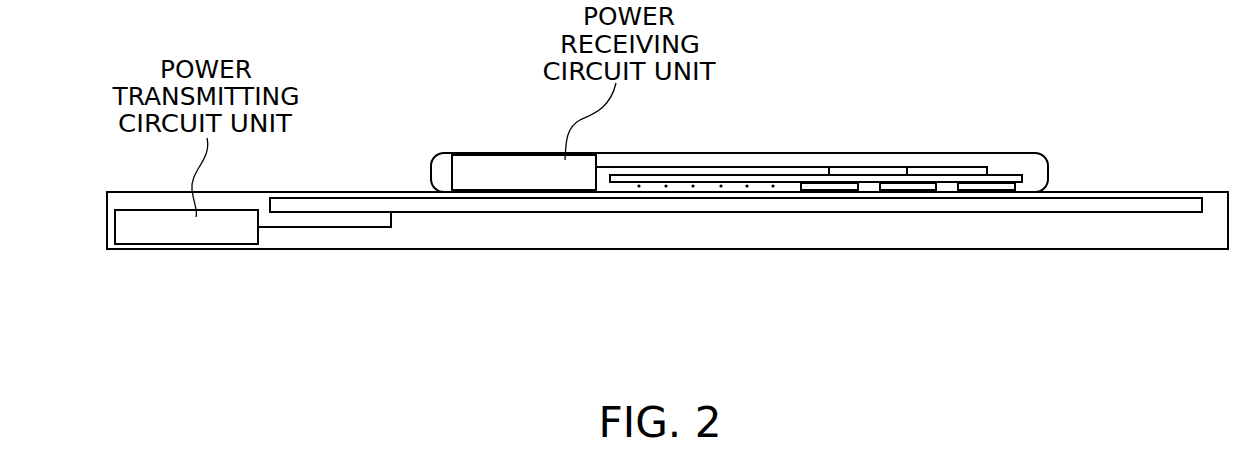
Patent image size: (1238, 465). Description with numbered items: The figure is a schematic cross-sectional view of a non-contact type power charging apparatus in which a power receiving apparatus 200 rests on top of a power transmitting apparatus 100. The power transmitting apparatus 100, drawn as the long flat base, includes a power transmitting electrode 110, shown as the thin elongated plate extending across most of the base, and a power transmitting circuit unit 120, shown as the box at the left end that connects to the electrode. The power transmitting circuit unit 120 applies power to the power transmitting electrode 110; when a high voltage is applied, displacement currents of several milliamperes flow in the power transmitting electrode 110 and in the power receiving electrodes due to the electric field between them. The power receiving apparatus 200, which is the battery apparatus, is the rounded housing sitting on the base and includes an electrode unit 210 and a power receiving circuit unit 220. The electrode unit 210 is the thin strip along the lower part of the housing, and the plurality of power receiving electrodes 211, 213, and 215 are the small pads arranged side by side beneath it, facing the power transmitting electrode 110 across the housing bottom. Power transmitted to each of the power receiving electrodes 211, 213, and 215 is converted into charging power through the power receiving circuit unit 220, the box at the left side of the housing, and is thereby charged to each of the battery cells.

The power transmitting apparatus 100 is at (518, 252).
The power transmitting electrode 110 is at (718, 213).
The power transmitting circuit unit 120 is at (175, 241).
The power receiving apparatus 200 is at (1021, 150).
The electrode unit 210 is at (1023, 180).
The power receiving electrode 211 is at (970, 184).
The power receiving electrode 213 is at (886, 184).
The power receiving electrode 215 is at (810, 184).
The power receiving circuit unit 220 is at (512, 160).